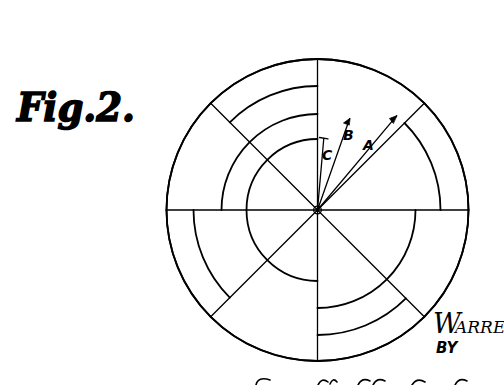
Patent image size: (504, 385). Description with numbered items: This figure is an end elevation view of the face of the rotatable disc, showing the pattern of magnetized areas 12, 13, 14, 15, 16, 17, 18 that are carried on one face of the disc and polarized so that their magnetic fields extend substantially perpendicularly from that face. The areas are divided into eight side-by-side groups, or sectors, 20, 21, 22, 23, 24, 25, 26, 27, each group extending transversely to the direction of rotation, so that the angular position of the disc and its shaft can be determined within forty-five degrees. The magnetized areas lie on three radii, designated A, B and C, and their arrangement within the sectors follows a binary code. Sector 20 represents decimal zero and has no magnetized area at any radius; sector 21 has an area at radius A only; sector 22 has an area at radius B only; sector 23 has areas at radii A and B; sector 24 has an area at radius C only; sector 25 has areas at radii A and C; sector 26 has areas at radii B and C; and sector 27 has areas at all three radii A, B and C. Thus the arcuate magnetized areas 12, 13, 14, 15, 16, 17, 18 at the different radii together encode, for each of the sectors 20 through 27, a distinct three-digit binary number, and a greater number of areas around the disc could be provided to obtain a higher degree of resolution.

The magnetized area 12 is at (275, 147).
The magnetized area 13 is at (268, 121).
The magnetized area 14 is at (270, 95).
The magnetized area 15 is at (208, 267).
The magnetized area 16 is at (341, 306).
The magnetized area 17 is at (345, 333).
The magnetized area 18 is at (432, 167).
The group of magnetized areas 20 is at (378, 83).
The group of magnetized areas 21 is at (451, 170).
The group of magnetized areas 22 is at (451, 258).
The group of magnetized areas 23 is at (400, 337).
The group of magnetized areas 24 is at (250, 340).
The group of magnetized areas 25 is at (185, 250).
The group of magnetized areas 26 is at (185, 150).
The group of magnetized areas 27 is at (258, 81).